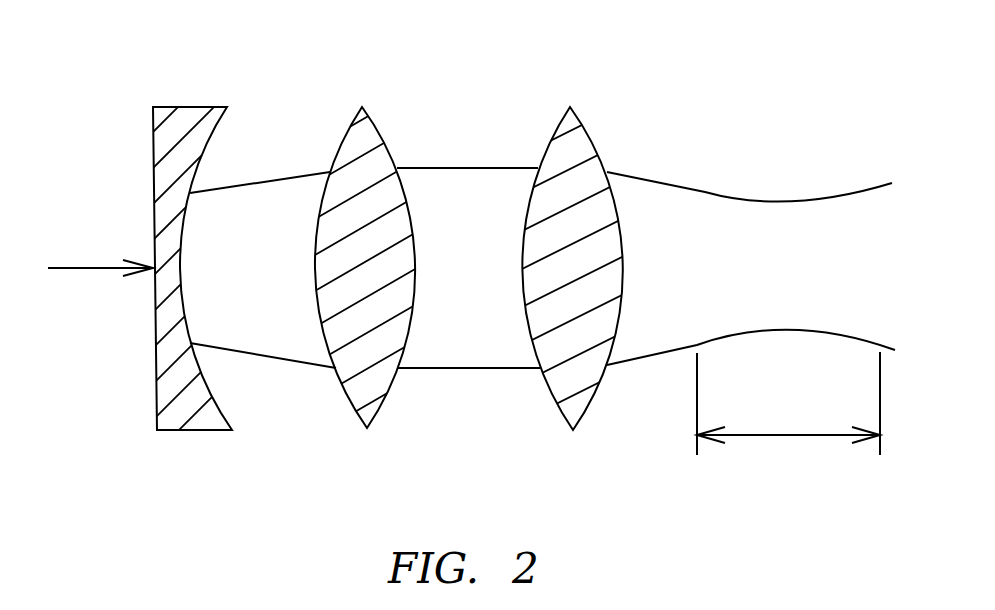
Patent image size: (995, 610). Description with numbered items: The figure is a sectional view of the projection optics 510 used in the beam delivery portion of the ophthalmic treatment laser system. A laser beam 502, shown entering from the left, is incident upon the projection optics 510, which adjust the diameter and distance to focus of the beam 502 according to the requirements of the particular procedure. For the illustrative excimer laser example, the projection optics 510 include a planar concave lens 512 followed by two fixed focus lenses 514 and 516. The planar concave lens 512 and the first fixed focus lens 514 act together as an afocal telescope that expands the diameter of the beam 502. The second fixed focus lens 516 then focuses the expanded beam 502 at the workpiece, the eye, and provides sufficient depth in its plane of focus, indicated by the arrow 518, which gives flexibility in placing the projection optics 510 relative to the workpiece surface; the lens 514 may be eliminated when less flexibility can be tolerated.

The laser beam 502 is at (90, 268).
The projection optics 510 is at (488, 58).
The planar concave lens 512 is at (173, 432).
The fixed focus lens 514 is at (360, 410).
The fixed focus lens 516 is at (562, 407).
The arrow 518 is at (802, 437).